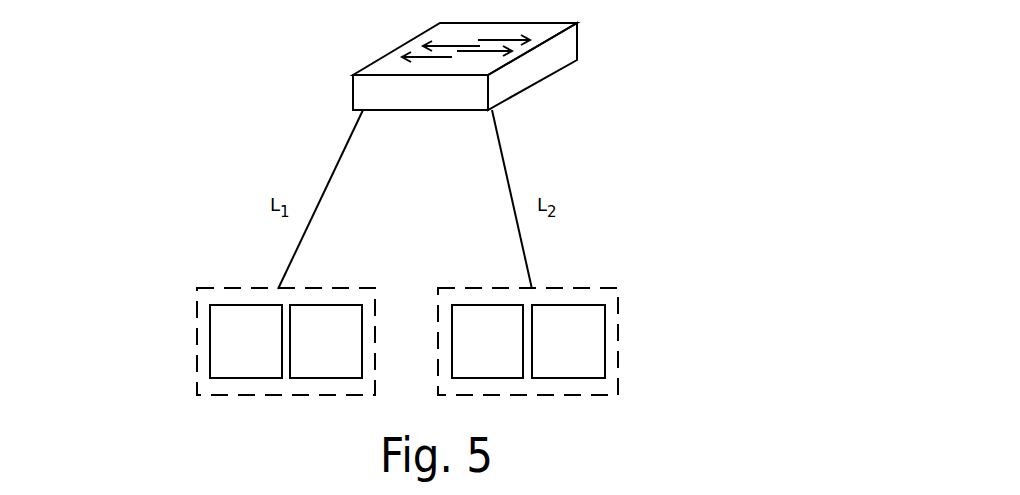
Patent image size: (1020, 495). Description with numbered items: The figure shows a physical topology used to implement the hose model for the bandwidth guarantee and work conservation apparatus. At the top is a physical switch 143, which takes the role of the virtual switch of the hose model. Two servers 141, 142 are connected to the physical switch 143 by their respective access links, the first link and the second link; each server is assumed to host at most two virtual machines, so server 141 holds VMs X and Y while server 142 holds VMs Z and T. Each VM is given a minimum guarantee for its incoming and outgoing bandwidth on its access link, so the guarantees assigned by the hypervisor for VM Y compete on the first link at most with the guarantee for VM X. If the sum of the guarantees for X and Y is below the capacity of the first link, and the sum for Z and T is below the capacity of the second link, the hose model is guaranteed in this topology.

The server 141 is at (192, 332).
The server 142 is at (612, 287).
The physical switch 143 is at (561, 86).